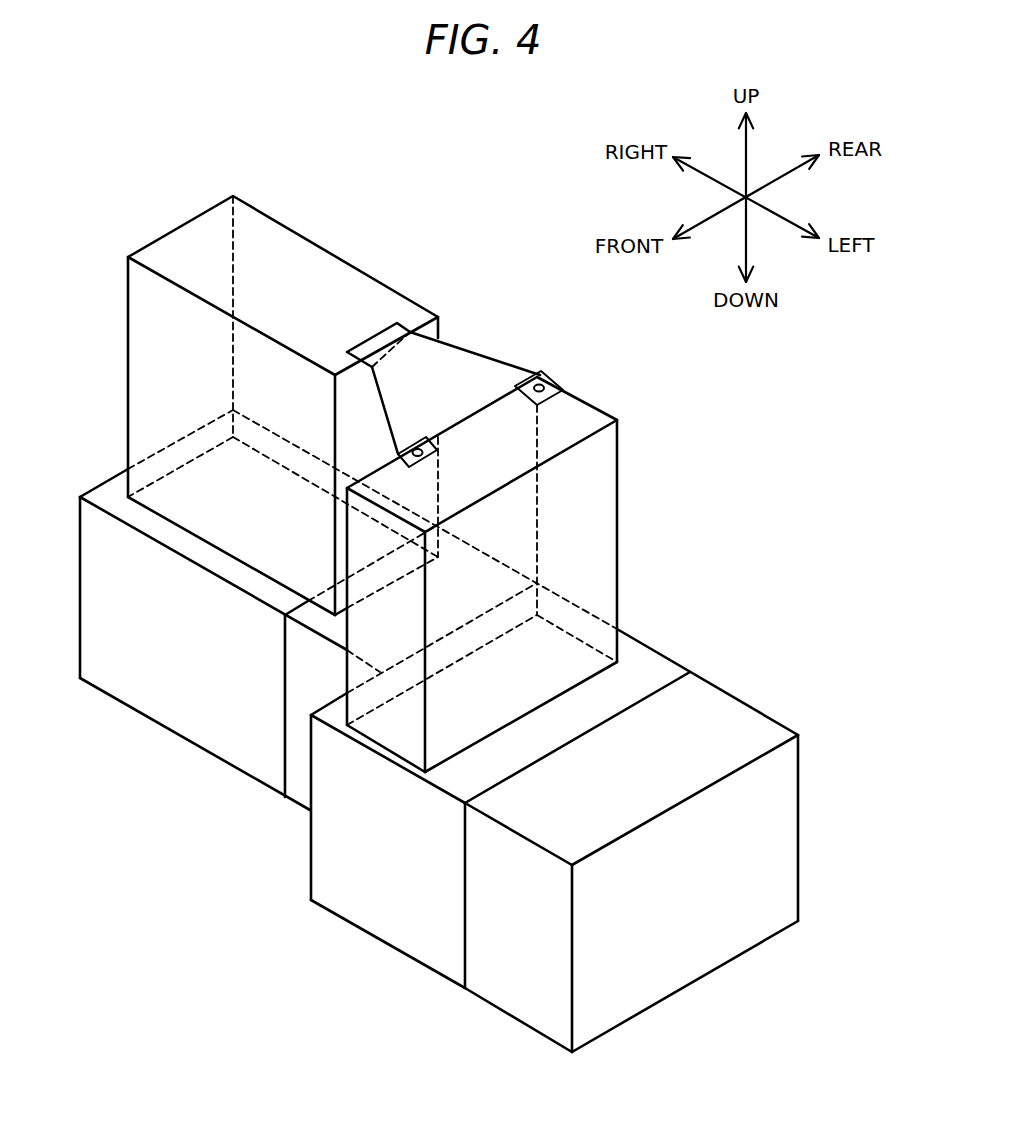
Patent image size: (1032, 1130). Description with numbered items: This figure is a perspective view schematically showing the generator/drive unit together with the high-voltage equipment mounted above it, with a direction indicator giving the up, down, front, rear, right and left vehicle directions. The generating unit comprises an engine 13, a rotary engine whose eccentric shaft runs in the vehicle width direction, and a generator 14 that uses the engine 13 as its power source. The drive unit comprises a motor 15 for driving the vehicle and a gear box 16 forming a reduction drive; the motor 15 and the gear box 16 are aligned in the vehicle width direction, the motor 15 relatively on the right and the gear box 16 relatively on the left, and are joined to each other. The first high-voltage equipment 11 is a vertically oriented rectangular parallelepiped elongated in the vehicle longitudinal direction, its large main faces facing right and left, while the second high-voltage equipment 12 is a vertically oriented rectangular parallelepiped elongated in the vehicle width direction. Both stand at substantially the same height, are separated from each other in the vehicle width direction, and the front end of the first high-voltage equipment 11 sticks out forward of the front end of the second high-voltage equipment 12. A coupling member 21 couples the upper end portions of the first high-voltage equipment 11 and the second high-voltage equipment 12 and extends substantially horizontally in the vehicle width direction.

The first high-voltage equipment 11 is at (578, 417).
The second high-voltage equipment 12 is at (336, 271).
The engine 13 is at (368, 918).
The generator 14 is at (513, 997).
The motor 15 is at (140, 697).
The gear box 16 is at (298, 795).
The coupling member 21 is at (467, 365).